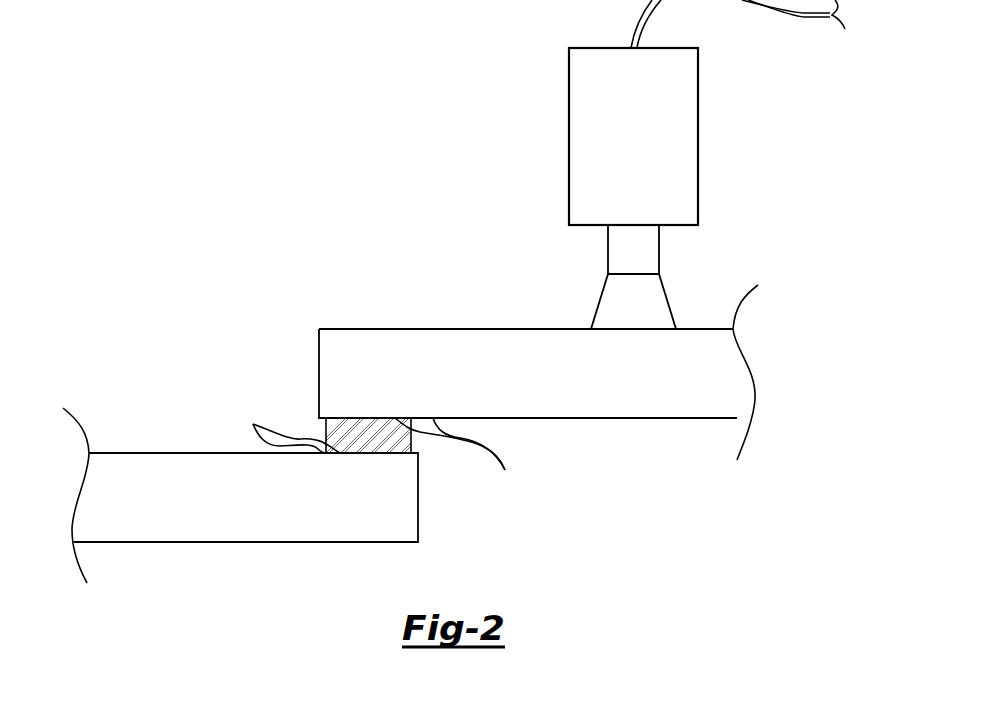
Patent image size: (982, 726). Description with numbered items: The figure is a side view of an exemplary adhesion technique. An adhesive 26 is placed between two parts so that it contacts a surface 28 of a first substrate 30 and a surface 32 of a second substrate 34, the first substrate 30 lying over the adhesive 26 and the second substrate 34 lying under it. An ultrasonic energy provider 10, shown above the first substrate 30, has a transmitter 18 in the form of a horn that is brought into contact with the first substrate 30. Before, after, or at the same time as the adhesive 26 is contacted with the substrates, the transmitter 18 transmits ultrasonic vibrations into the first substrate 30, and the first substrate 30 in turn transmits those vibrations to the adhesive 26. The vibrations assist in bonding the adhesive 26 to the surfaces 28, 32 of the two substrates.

The ultrasonic energy provider 10 is at (741, 130).
The transmitter 18 is at (701, 276).
The adhesive 26 is at (300, 426).
The surface of first substrate 28 is at (460, 459).
The first substrate 30 is at (548, 389).
The surface of second substrate 32 is at (282, 430).
The second substrate 34 is at (258, 512).